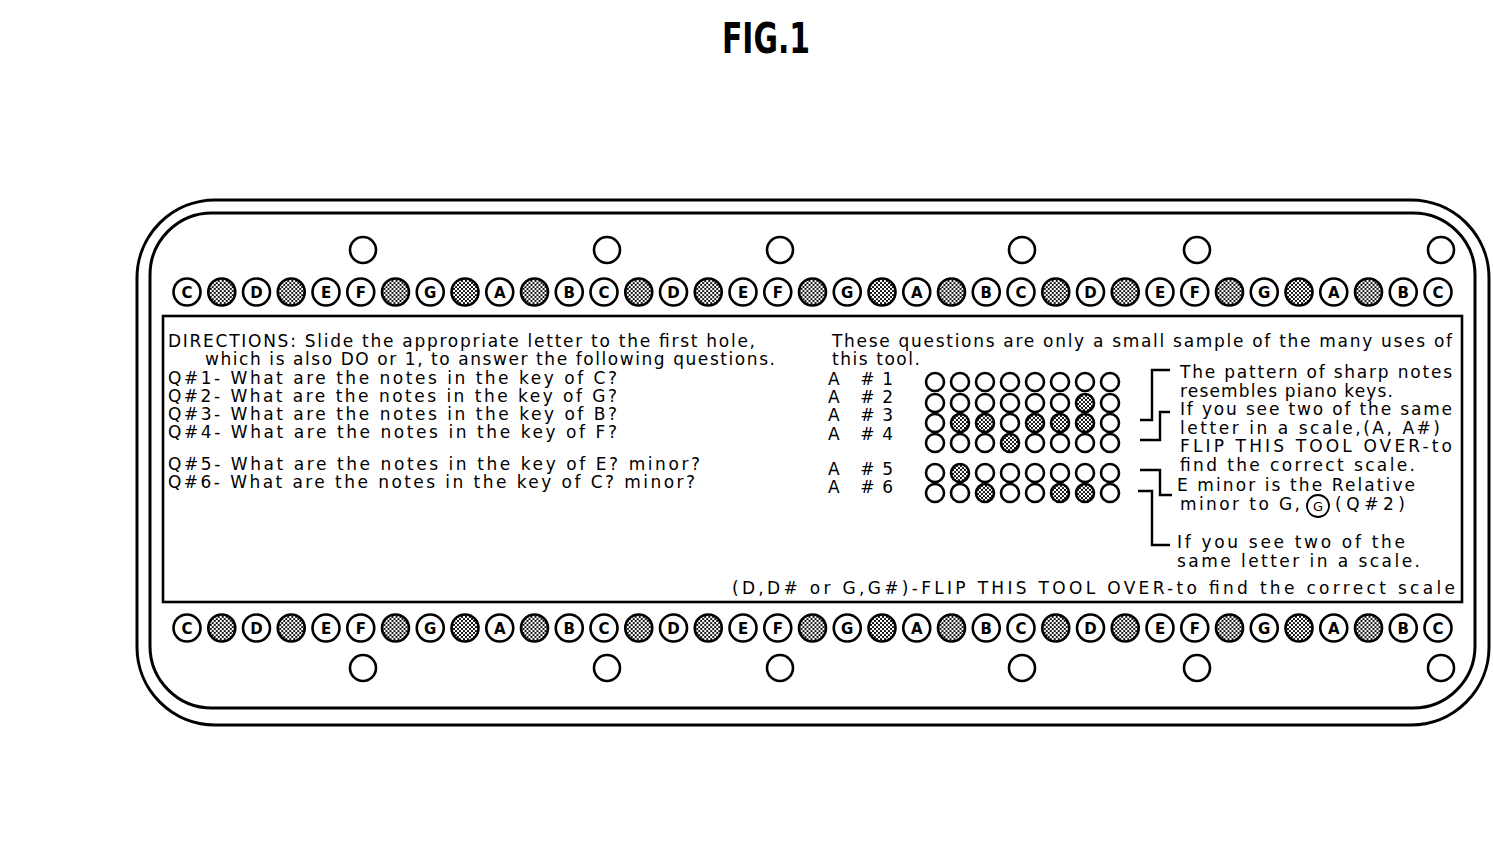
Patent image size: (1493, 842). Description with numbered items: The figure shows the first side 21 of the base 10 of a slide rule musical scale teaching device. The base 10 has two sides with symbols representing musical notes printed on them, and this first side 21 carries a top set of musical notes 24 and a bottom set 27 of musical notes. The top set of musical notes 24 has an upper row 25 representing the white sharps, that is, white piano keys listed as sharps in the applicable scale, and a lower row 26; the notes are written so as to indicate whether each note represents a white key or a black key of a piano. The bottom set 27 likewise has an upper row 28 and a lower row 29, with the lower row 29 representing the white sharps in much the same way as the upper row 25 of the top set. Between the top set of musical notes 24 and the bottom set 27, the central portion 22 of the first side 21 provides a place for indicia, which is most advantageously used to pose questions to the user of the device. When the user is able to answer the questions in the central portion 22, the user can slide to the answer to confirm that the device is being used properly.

The base 10 is at (1199, 121).
The first side 21 is at (528, 200).
The central portion 22 is at (755, 430).
The top set of musical notes 24 is at (1309, 282).
The upper row 25 is at (1021, 237).
The lower row 26 is at (818, 457).
The bottom set of musical notes 27 is at (259, 641).
The upper row 28 is at (539, 614).
The lower row 29 is at (598, 677).